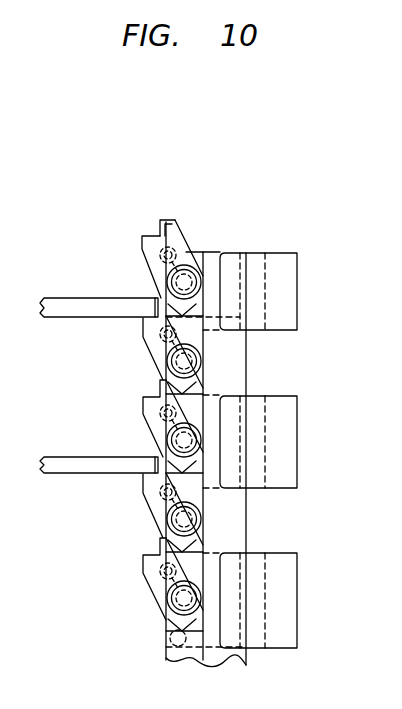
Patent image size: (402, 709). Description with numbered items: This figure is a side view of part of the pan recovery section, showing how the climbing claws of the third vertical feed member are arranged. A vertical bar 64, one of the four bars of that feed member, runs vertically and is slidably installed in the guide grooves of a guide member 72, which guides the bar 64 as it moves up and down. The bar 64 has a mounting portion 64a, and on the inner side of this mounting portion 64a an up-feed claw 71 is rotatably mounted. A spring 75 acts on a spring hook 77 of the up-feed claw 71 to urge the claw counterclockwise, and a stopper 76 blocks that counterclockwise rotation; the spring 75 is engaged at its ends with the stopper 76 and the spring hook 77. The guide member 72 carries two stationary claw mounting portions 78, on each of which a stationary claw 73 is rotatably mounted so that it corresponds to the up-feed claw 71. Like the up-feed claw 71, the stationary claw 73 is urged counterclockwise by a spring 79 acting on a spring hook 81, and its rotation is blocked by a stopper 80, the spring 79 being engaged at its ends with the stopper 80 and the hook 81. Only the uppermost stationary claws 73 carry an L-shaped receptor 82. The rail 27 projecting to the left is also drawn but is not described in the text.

The guide rail 27 is at (62, 298).
The stationary claw 73 is at (148, 253).
The L-shaped receptor 82 is at (160, 222).
The spring hook 81 is at (179, 236).
The spring 79 is at (200, 268).
The stationary claw mounting portion 78 is at (212, 266).
The stopper 80 is at (190, 310).
The guide member 72 is at (286, 297).
The mounting portion 64a is at (206, 345).
The vertical bar 64 is at (230, 374).
The spring hook 77 is at (158, 334).
The up-feed claw 71 is at (149, 350).
The spring 75 is at (162, 369).
The stopper 76 is at (162, 410).